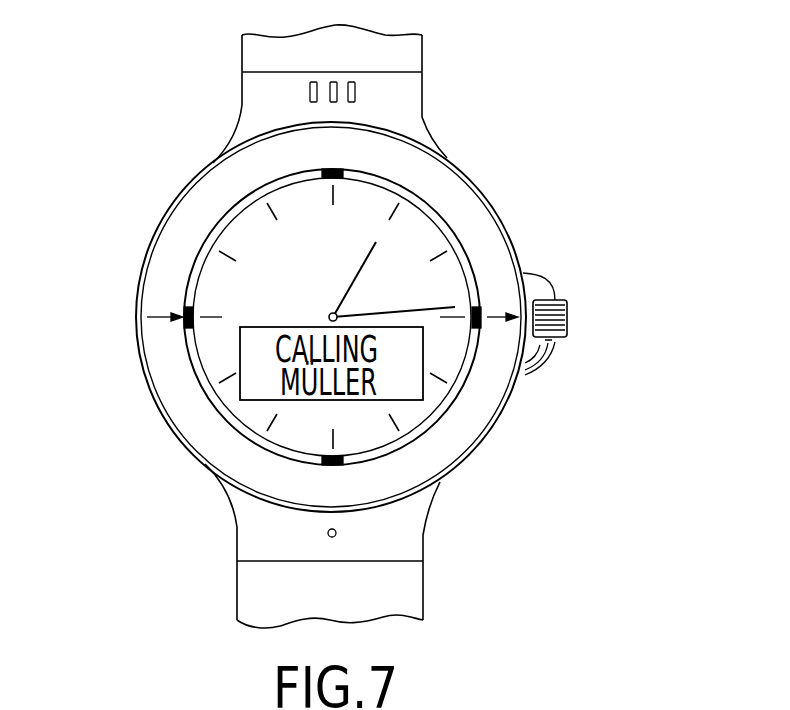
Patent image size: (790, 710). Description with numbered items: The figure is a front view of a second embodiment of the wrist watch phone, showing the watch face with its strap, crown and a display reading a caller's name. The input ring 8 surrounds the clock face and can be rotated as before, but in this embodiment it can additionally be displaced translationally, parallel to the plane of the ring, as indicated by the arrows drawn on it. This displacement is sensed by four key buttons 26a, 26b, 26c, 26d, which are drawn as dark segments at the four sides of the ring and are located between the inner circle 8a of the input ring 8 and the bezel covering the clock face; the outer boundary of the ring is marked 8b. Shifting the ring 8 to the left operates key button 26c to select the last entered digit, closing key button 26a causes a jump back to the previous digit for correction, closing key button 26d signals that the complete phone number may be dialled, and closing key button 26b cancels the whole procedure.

The input ring 8 is at (177, 242).
The inner circle of the input ring 8a is at (465, 247).
The outer ring 8b is at (468, 174).
The key button 26a is at (482, 328).
The key button 26b is at (345, 172).
The key button 26c is at (185, 326).
The key button 26d is at (342, 466).